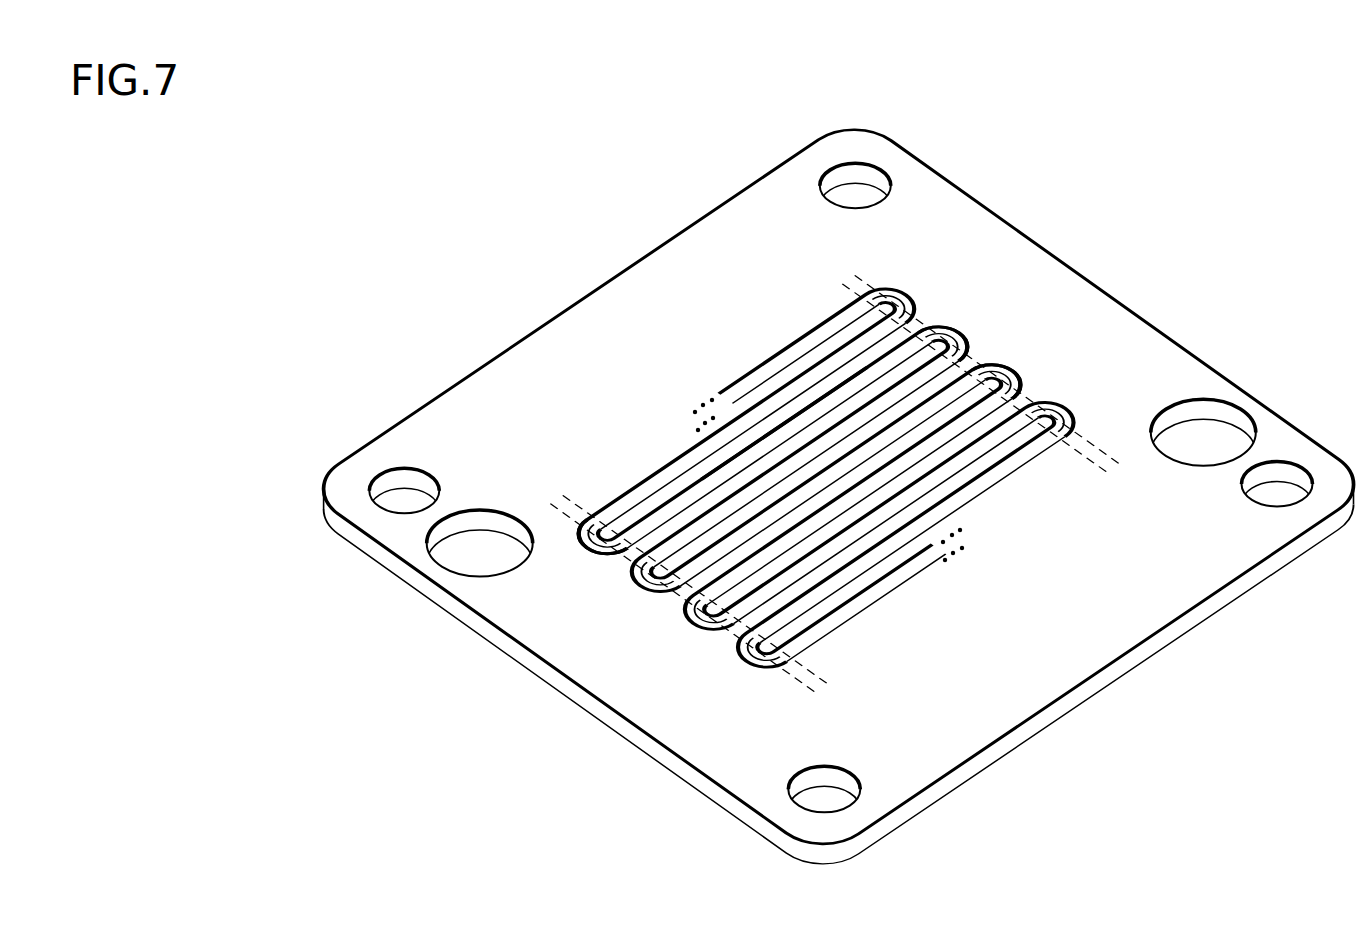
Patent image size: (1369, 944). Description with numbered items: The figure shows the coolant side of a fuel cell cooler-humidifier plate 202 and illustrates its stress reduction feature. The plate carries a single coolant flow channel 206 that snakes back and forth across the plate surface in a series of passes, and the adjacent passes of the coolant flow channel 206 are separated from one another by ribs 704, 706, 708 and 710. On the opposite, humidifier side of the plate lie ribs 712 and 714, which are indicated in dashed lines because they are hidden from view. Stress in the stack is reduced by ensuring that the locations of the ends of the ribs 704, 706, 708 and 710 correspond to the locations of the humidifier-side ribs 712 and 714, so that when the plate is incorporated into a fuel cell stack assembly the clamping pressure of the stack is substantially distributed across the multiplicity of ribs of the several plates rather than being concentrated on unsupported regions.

The cooler-humidifier plate 202 is at (563, 217).
The coolant flow channel 206 is at (667, 477).
The rib 704 is at (983, 398).
The rib 706 is at (747, 517).
The rib 708 is at (926, 360).
The rib 710 is at (627, 520).
The rib 712 is at (1086, 442).
The rib 714 is at (815, 672).